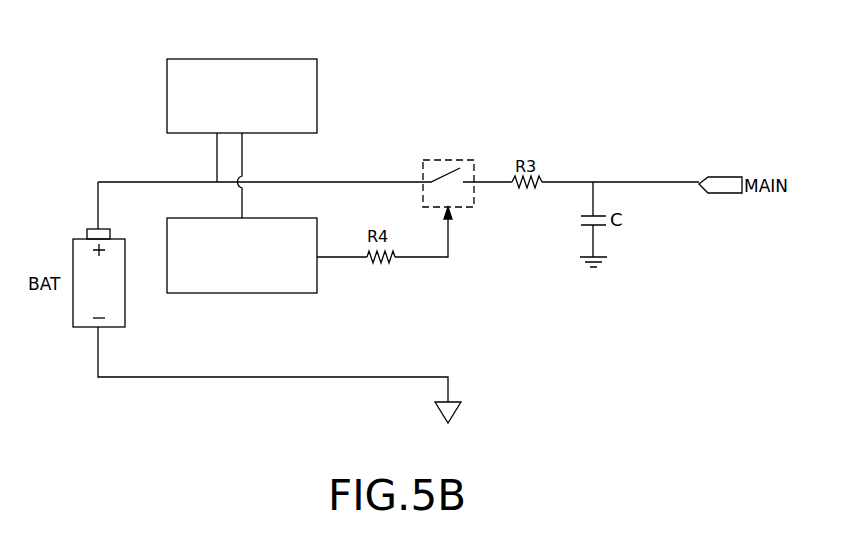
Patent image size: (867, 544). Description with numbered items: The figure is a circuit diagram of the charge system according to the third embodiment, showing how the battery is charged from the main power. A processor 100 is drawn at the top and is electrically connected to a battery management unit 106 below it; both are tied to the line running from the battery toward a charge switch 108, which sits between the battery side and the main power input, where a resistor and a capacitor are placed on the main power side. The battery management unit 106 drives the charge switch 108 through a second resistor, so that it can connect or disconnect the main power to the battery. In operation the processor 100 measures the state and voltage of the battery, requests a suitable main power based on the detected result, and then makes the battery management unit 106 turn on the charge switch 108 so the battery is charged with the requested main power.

The processor 100 is at (243, 63).
The battery management unit 106 is at (232, 218).
The charge switch 108 is at (448, 163).